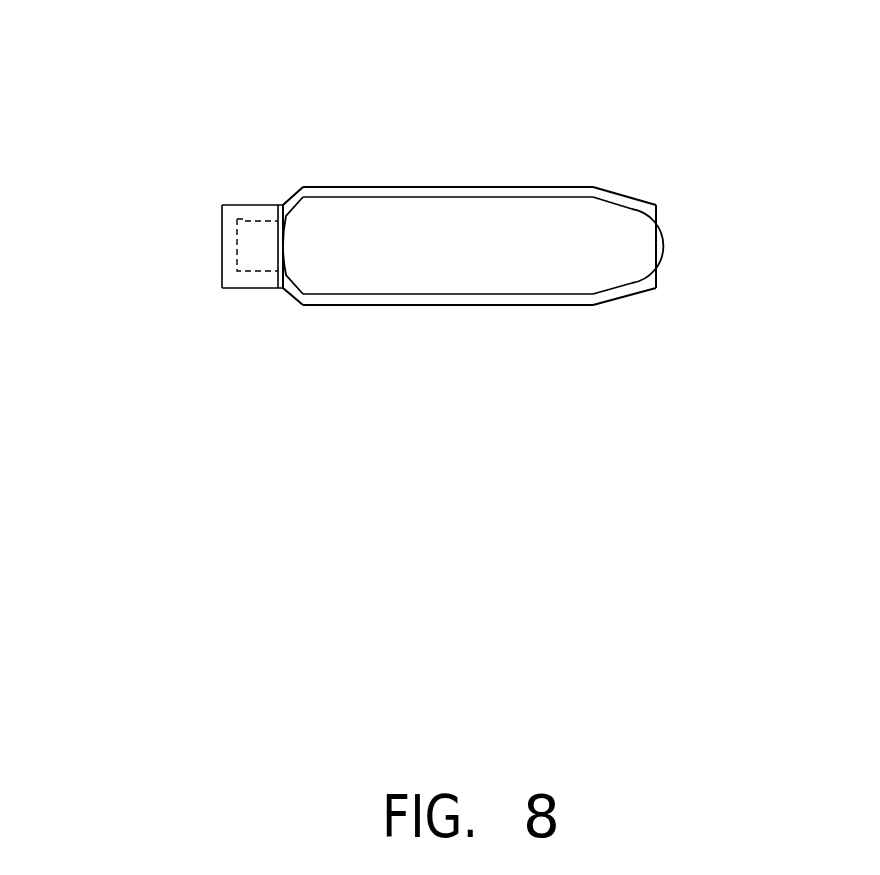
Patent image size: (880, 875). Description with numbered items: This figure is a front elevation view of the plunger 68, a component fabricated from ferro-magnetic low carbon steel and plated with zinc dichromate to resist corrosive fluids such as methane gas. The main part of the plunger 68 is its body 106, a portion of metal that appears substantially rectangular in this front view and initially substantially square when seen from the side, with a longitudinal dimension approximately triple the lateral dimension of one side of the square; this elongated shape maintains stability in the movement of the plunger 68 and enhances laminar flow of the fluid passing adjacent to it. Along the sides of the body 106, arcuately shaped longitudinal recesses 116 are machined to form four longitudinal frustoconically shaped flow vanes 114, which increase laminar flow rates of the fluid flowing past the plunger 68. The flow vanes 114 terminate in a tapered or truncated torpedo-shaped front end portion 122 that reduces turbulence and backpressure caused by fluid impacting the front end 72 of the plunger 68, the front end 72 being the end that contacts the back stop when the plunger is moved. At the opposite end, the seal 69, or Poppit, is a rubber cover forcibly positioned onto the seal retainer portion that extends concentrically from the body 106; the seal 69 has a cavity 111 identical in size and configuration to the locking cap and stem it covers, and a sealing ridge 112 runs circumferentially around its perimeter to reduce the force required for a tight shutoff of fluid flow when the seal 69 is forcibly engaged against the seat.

The body 106 is at (438, 162).
The flow vanes 114 is at (423, 245).
The longitudinal recesses 116 is at (457, 201).
The front end 72 is at (705, 228).
The plunger 68 is at (619, 168).
The front end portion 122 is at (672, 244).
The seal 69 is at (235, 179).
The sealing ridge 112 is at (154, 222).
The cavity 111 is at (194, 264).